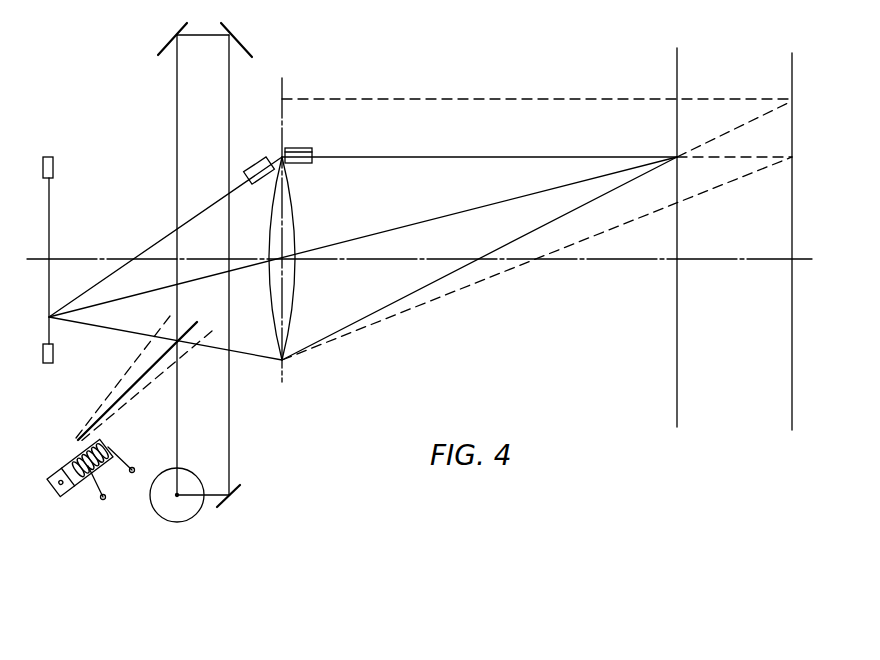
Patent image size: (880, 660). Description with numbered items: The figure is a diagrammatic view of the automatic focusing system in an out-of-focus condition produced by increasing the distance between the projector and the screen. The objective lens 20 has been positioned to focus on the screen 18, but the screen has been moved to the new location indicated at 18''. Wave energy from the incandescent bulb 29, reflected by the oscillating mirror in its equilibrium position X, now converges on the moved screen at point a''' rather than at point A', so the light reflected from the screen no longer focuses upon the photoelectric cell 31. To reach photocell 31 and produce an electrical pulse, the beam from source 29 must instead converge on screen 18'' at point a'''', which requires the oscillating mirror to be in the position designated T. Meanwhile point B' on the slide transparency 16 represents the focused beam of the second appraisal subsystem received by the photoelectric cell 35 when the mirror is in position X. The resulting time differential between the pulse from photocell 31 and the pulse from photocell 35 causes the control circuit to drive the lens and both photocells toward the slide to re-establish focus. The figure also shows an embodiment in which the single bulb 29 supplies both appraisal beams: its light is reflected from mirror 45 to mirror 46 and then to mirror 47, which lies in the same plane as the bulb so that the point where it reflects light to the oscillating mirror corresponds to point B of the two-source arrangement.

The mirror 47 is at (177, 42).
The mirror 46 is at (248, 43).
The mirror 45 is at (240, 489).
The point B is at (159, 62).
The point B' is at (34, 318).
The slide transparency 16 is at (50, 203).
The photoelectric cell 35 is at (256, 168).
The photoelectric cell 31 is at (300, 148).
The objective lens 20 is at (292, 201).
The screen 18 is at (658, 225).
The screen 18'' is at (782, 227).
The point a''' is at (812, 98).
The point a'''' is at (815, 156).
The point A' is at (702, 172).
The position X is at (198, 327).
The position T is at (184, 322).
The incandescent bulb 29 is at (183, 522).